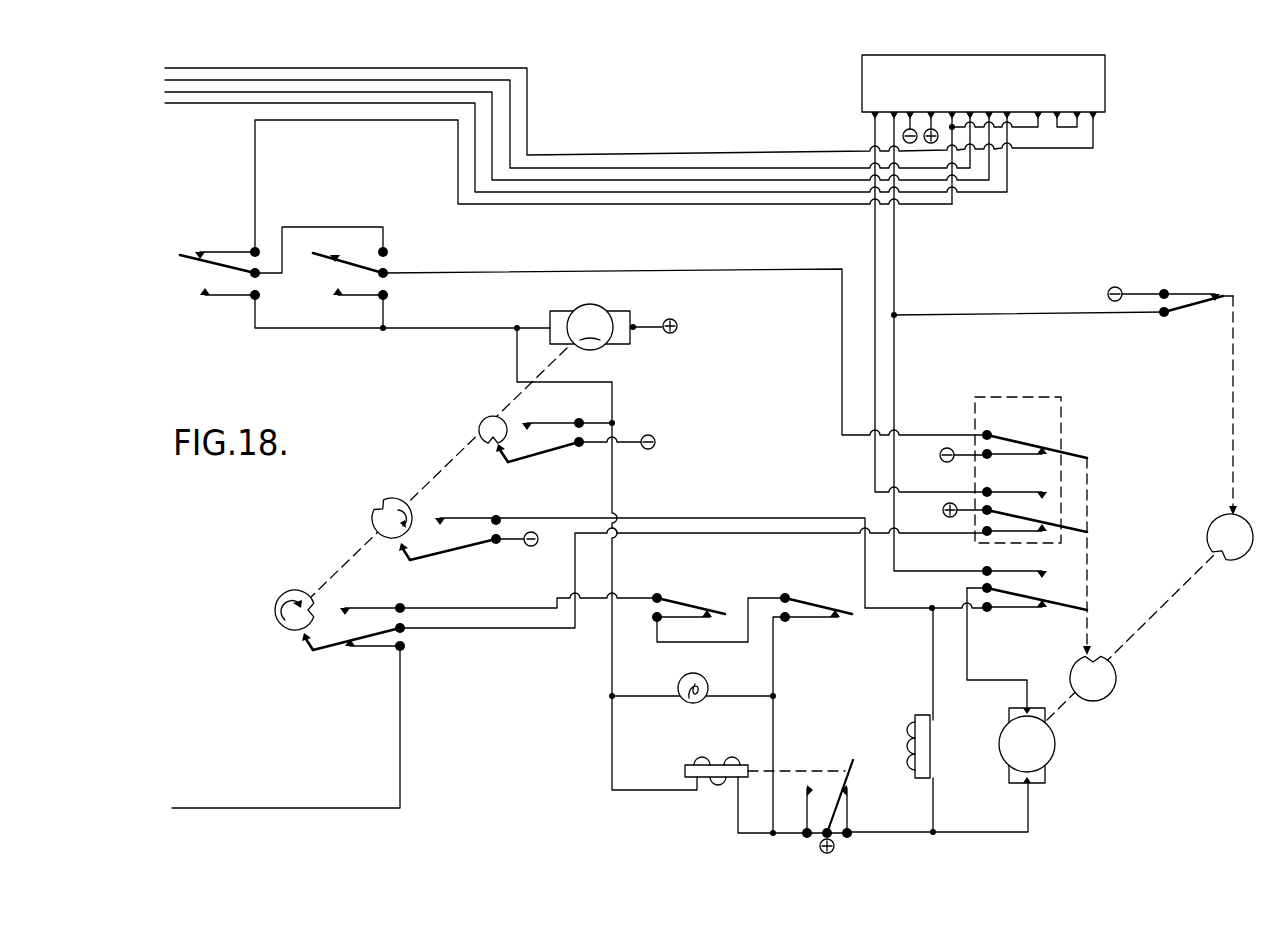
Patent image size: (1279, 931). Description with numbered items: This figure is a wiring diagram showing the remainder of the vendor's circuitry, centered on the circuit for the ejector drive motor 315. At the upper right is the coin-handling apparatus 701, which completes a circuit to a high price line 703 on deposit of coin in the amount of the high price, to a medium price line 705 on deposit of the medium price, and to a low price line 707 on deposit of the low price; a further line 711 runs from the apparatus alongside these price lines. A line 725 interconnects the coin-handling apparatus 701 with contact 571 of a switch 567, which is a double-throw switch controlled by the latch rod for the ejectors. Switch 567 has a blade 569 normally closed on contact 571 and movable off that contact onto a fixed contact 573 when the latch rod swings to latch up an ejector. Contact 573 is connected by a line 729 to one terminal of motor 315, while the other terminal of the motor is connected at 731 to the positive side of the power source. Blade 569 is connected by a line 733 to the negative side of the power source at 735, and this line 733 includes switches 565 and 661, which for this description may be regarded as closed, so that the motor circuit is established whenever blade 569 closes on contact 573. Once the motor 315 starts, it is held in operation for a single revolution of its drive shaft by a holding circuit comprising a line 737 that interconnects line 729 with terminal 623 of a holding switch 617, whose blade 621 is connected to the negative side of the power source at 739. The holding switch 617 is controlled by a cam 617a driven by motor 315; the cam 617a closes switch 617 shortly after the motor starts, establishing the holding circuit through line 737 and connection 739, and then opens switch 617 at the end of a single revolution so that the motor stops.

The high price line 703 is at (173, 106).
The medium price line 705 is at (223, 96).
The low price line 707 is at (590, 170).
The conductor 711 is at (668, 154).
The coin-handling apparatus 701 is at (862, 84).
The line 725 is at (256, 164).
The contact 571 is at (202, 251).
The blade 569 is at (182, 260).
The fixed contact 573 is at (200, 295).
The switch 567 is at (228, 308).
The switch 565 is at (352, 302).
The line 729 is at (428, 332).
The electric motor 315 is at (593, 327).
The connection to positive side of power source 731 is at (668, 338).
The line 733 is at (618, 269).
The negative side of power source 735 is at (945, 463).
The line 737 is at (613, 396).
The negative side of power source 739 is at (647, 452).
The cam 617a is at (481, 424).
The terminal 623 is at (533, 425).
The blade 621 is at (508, 468).
The holding switch 617 is at (542, 466).
The switch 661 is at (1022, 430).